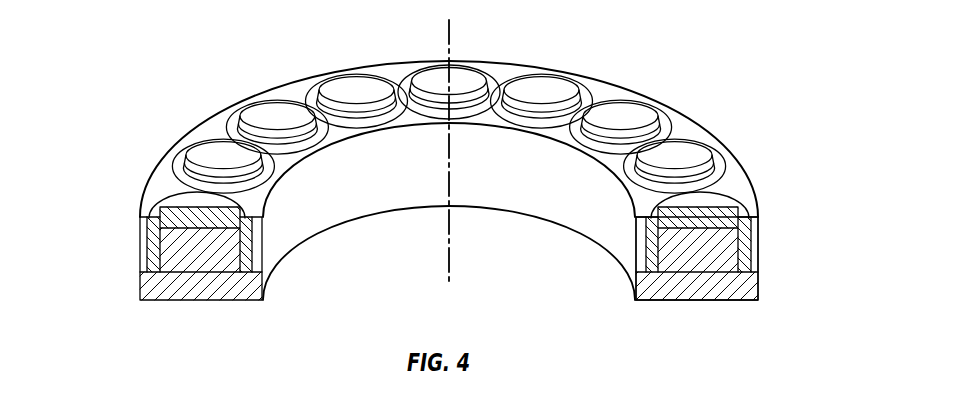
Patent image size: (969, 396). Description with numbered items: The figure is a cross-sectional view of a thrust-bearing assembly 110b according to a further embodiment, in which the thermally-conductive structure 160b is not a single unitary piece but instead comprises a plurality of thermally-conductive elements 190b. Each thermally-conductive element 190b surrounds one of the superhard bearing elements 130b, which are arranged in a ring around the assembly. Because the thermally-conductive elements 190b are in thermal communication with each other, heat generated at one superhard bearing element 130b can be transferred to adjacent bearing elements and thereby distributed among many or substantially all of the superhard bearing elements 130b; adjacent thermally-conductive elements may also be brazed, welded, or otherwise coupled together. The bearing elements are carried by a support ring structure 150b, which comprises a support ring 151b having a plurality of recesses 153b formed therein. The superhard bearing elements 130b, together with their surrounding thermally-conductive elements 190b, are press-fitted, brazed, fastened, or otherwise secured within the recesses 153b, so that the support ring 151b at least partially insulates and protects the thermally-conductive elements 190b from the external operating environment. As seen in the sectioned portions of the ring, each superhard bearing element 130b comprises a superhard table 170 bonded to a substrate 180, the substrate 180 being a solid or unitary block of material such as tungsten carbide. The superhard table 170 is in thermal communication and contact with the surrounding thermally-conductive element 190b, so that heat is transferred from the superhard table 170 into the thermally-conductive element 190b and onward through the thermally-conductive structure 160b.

The thrust-bearing assembly 110b is at (709, 66).
The superhard bearing element 130b is at (561, 72).
The thermally-conductive element 190b is at (722, 168).
The thermally-conductive structure 160b is at (735, 185).
The superhard table 170 is at (723, 208).
The substrate 180 is at (675, 247).
The support ring structure 150b is at (768, 216).
The support ring 151b is at (703, 288).
The recess 153b is at (150, 248).